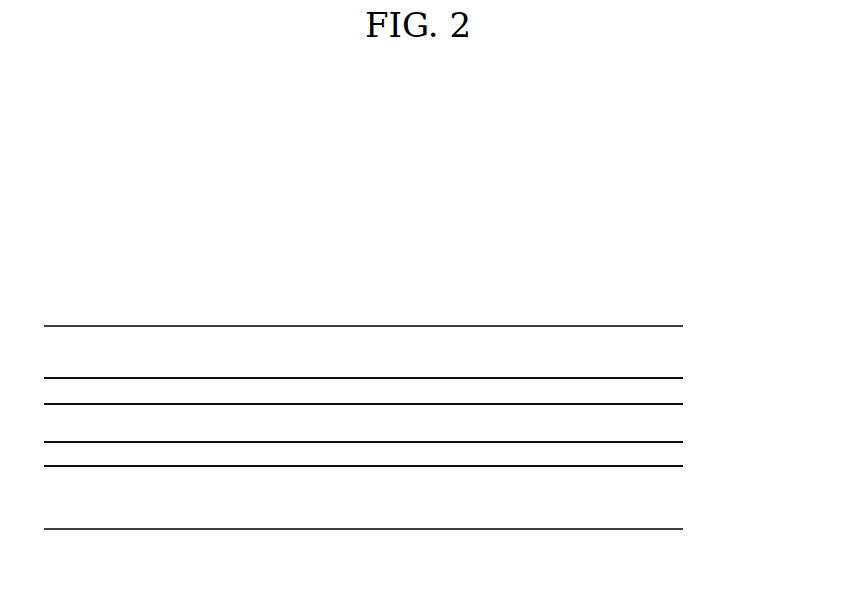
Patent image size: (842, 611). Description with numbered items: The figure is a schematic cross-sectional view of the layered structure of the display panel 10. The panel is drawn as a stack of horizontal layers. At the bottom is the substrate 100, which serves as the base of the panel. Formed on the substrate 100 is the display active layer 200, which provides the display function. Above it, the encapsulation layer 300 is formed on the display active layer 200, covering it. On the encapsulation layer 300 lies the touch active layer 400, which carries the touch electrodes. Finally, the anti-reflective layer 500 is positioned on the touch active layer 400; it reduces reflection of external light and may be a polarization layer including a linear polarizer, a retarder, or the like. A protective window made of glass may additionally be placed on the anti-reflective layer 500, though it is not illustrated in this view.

The display panel 10 is at (271, 205).
The substrate 100 is at (670, 504).
The display active layer 200 is at (670, 454).
The encapsulation layer 300 is at (670, 425).
The touch active layer 400 is at (670, 388).
The anti-reflective layer 500 is at (670, 344).